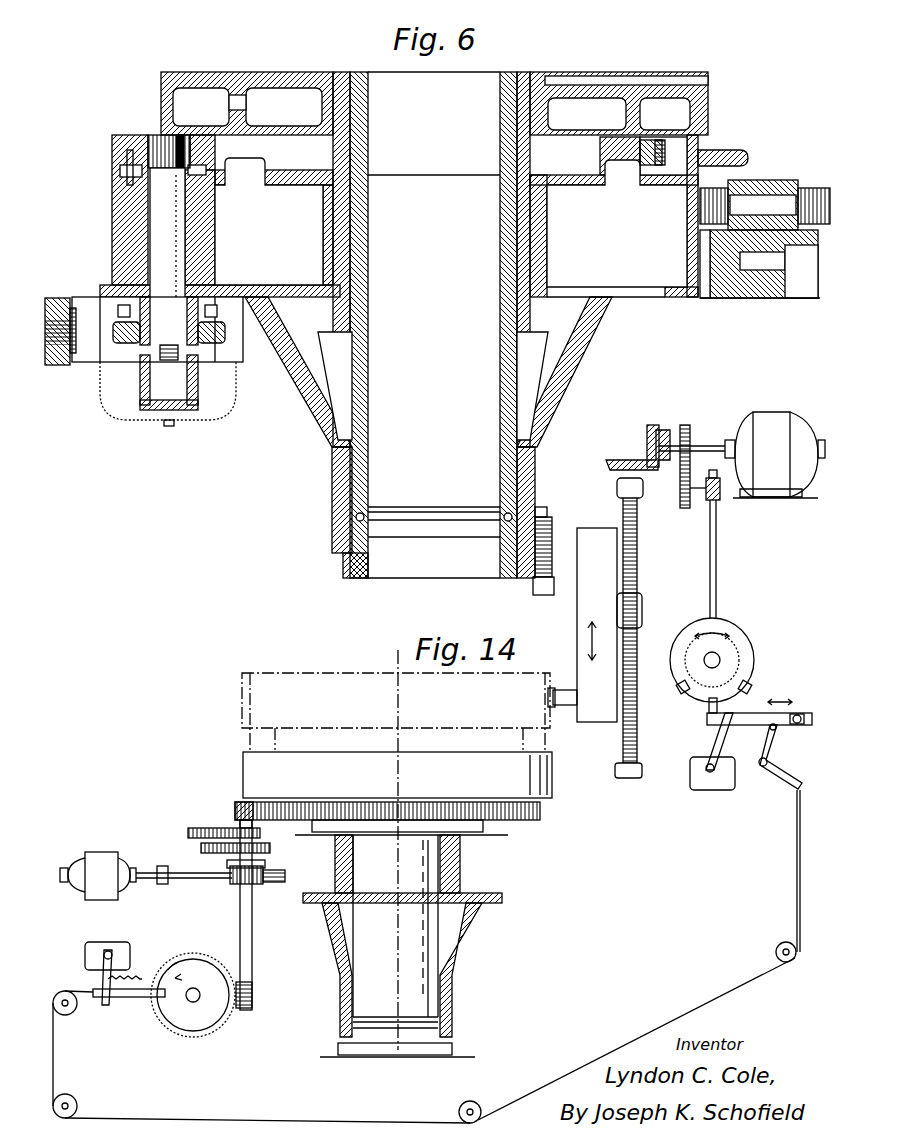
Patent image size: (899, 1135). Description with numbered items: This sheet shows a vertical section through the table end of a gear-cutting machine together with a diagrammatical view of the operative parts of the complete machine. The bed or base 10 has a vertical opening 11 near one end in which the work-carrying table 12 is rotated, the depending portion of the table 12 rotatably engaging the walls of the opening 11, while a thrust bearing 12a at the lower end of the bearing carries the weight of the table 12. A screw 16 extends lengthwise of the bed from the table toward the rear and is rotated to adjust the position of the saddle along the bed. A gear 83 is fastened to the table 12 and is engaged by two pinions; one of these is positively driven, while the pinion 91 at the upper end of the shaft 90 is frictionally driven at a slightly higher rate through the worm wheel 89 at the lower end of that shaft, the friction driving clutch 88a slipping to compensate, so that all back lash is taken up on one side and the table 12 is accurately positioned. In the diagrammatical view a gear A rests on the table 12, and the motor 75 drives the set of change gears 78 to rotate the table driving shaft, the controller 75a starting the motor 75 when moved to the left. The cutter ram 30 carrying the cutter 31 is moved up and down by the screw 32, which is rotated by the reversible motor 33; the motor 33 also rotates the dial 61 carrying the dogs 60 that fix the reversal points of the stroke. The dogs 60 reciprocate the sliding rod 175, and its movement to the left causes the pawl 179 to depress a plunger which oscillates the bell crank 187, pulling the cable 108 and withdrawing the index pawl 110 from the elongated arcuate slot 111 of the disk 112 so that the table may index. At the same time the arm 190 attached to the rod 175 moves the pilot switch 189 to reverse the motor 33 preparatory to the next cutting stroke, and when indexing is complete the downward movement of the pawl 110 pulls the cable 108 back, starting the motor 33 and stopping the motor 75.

In FIG. 6, the bed or base 10 is at (112, 216).
In FIG. 14, the bed or base 10 is at (458, 868).
In FIG. 6, the vertical opening 11 is at (548, 250).
In FIG. 6, the work-carrying table 12 is at (192, 72).
In FIG. 14, the work-carrying table 12 is at (243, 774).
In FIG. 6, the thrust bearing 12a is at (360, 517).
In FIG. 6, the screw 16 is at (806, 188).
In FIG. 6, the table driving gear 83 is at (700, 152).
In FIG. 14, the table driving gear 83 is at (538, 810).
In FIG. 6, the friction driving clutch 88a is at (56, 364).
In FIG. 6, the worm wheel 89 is at (232, 348).
In FIG. 6, the shaft 90 is at (172, 243).
In FIG. 6, the pinion 91 is at (148, 135).
In FIG. 14, the gear A is at (242, 690).
In FIG. 14, the cutter ram 30 is at (577, 610).
In FIG. 14, the cutter 31 is at (566, 705).
In FIG. 14, the screw 32 is at (637, 566).
In FIG. 14, the motor 33 is at (768, 420).
In FIG. 14, the dogs 60 is at (752, 688).
In FIG. 14, the dial 61 is at (752, 656).
In FIG. 14, the motor 75 is at (108, 844).
In FIG. 14, the controller 75a is at (87, 955).
In FIG. 14, the change gears 78 is at (190, 832).
In FIG. 14, the cable 108 is at (268, 1122).
In FIG. 14, the index pawl 110 is at (131, 997).
In FIG. 14, the elongated arcuate slot 111 is at (166, 1014).
In FIG. 14, the disk 112 is at (208, 1022).
In FIG. 14, the rod 175 is at (760, 725).
In FIG. 14, the pawl 179 is at (800, 730).
In FIG. 14, the bell crank 187 is at (791, 788).
In FIG. 14, the pilot switch 189 is at (700, 788).
In FIG. 14, the arm 190 is at (720, 740).